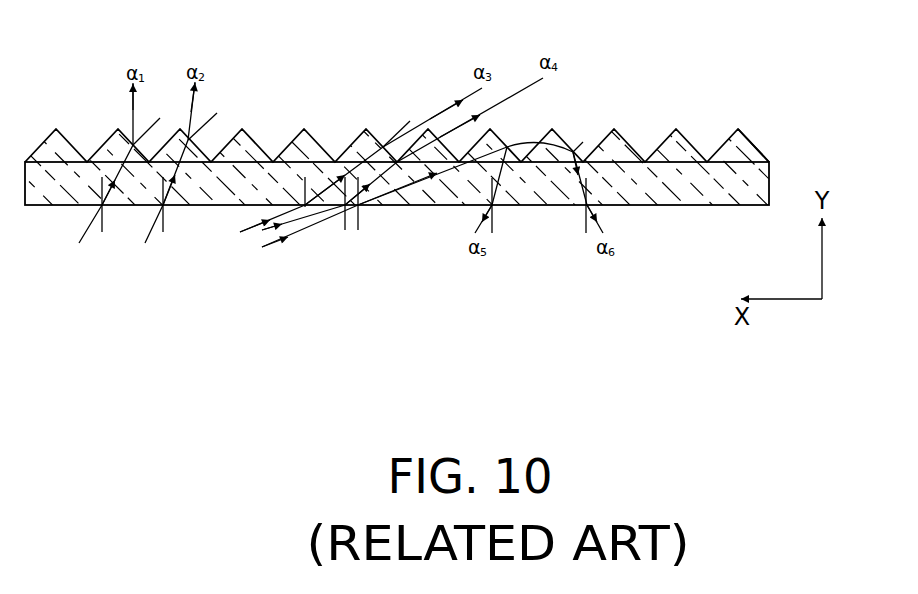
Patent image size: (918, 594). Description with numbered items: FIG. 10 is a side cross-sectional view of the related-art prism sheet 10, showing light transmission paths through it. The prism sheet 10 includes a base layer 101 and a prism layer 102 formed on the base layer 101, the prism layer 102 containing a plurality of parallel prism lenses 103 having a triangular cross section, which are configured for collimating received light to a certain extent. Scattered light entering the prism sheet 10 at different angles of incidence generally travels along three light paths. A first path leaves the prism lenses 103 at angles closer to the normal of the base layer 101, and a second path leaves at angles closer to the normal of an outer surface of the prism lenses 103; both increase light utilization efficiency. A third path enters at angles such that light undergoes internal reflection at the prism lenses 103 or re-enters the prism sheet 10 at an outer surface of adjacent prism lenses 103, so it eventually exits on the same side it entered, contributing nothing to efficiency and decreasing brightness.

The prism sheet 10 is at (430, 161).
The base layer 101 is at (395, 209).
The prism layer 102 is at (681, 141).
The prism lenses 103 is at (757, 150).